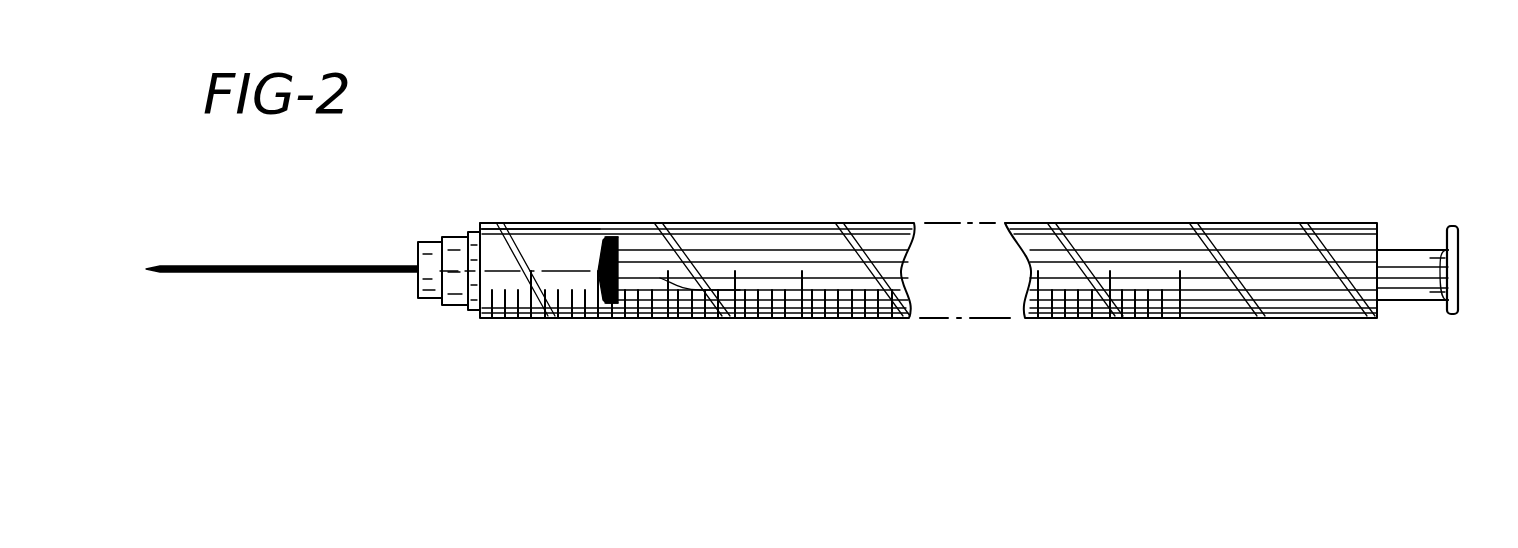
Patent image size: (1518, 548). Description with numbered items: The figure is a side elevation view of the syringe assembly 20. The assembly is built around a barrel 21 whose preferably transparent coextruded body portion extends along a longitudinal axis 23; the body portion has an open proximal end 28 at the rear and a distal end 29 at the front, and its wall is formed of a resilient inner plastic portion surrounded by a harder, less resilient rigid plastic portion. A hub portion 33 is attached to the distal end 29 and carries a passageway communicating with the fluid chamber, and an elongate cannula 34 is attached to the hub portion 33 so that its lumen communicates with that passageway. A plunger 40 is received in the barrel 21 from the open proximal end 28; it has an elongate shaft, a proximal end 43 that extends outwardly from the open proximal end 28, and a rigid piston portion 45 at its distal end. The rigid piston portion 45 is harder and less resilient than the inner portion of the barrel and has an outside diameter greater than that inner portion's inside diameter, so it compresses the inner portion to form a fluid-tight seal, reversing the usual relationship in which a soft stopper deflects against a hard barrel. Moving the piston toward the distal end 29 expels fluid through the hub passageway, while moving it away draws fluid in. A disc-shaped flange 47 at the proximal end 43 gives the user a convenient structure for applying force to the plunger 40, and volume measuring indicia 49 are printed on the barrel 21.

The syringe assembly 20 is at (1062, 202).
The barrel 21 is at (822, 223).
The longitudinal axis 23 is at (565, 320).
The open proximal end 28 is at (1330, 319).
The distal end 29 is at (537, 229).
The hub portion 33 is at (461, 302).
The elongate cannula 34 is at (296, 267).
The plunger 40 is at (1300, 270).
The proximal end 43 is at (1418, 249).
The rigid piston portion 45 is at (620, 233).
The disc-shaped flange 47 is at (1456, 315).
The volume measuring indicia 49 is at (1190, 319).